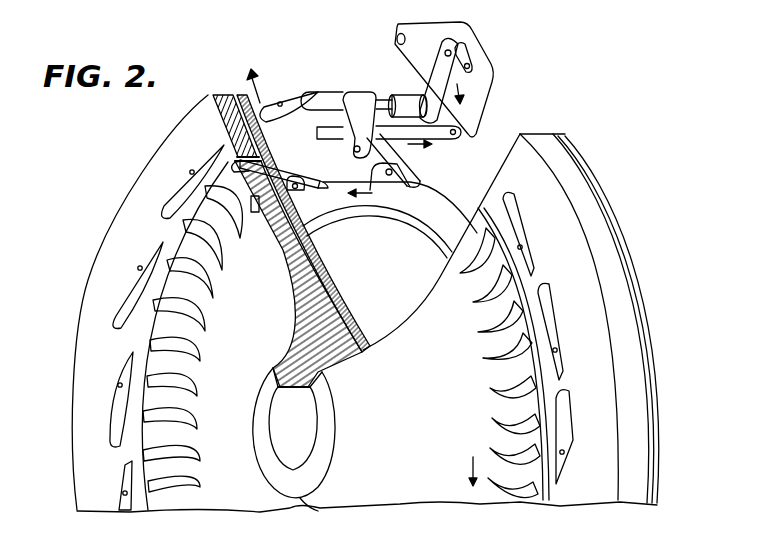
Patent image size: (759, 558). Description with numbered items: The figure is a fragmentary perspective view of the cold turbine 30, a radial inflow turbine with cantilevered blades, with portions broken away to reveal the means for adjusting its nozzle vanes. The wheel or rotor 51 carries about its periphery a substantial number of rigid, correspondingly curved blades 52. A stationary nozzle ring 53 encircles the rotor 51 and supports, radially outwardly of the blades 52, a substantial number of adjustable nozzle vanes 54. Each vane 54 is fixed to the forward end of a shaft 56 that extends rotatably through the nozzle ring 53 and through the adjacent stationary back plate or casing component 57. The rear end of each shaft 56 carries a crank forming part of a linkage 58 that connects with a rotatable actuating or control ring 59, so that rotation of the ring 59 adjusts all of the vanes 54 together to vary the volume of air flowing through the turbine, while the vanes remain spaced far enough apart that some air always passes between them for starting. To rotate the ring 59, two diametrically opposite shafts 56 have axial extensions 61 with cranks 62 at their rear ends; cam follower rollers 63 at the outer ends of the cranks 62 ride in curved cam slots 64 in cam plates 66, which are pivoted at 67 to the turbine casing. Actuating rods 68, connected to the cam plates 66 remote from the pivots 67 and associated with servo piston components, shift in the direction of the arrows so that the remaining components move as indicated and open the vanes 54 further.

The cold turbine 30 is at (95, 179).
The wheel or rotor 51 is at (442, 483).
The rotor blades 52 is at (204, 332).
The stationary nozzle ring 53 is at (596, 209).
The adjustable nozzle vanes 54 is at (138, 266).
The shaft 56 is at (192, 170).
The back plate or casing component 57 is at (333, 280).
The linkage 58 is at (282, 163).
The actuating or control ring 59 is at (447, 200).
The axial extensions 61 is at (388, 98).
The cranks 62 is at (428, 78).
The cam follower rollers 63 is at (467, 50).
The curved cam slots 64 is at (472, 62).
The cam plates 66 is at (470, 100).
The pivot 67 is at (397, 36).
The actuating rods 68 is at (443, 139).